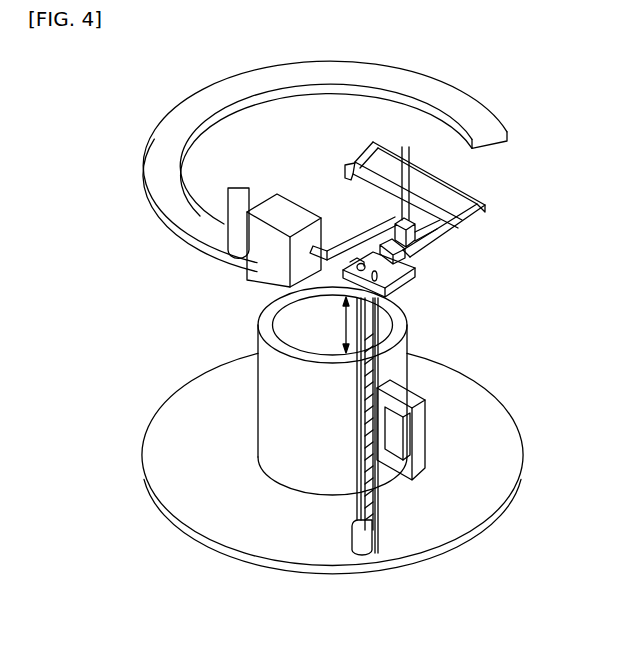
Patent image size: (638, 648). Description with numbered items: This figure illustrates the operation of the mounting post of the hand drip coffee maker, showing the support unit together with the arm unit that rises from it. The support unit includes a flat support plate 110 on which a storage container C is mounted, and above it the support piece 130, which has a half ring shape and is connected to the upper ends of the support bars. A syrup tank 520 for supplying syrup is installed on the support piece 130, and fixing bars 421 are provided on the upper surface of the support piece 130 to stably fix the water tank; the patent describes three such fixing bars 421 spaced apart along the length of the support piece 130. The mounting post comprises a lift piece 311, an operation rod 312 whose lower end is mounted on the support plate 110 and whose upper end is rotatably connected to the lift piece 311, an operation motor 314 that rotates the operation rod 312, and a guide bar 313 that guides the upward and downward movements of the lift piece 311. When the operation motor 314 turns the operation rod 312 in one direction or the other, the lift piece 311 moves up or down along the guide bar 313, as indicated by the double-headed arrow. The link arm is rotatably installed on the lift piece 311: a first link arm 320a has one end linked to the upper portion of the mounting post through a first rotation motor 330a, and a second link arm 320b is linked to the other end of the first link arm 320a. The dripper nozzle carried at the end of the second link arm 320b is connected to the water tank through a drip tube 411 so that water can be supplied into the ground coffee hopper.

The support plate 110 is at (480, 493).
The support piece 130 is at (157, 175).
The lift piece 311 is at (412, 278).
The operation rod 312 is at (353, 516).
The guide bar 313 is at (376, 503).
The operation motor 314 is at (357, 548).
The first link arm 320a is at (434, 223).
The second link arm 320b is at (440, 188).
The first rotation motor 330a is at (408, 285).
The drip tube 411 is at (486, 208).
The fixing bar 421 is at (226, 214).
The syrup tank 520 is at (266, 265).
The storage container C is at (272, 466).